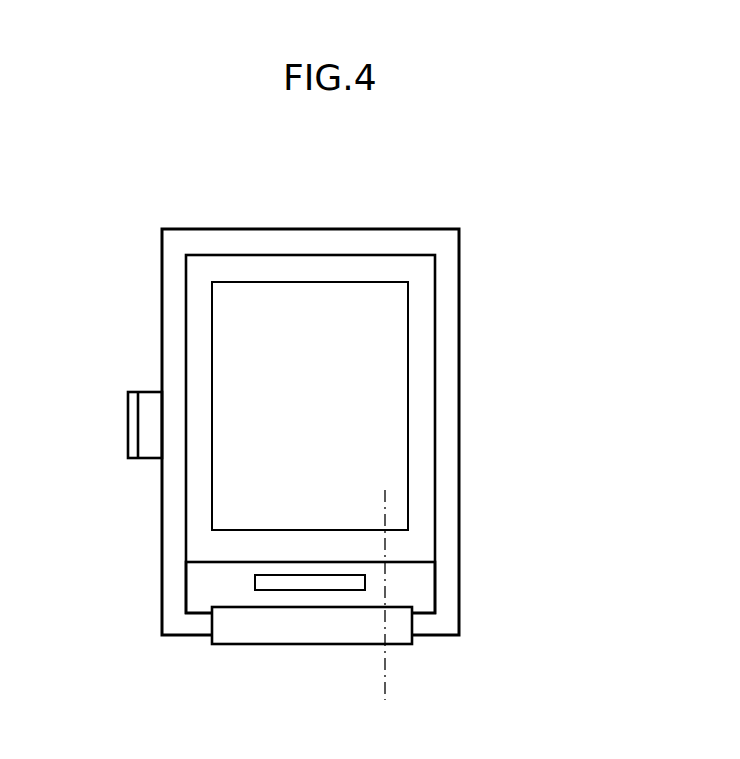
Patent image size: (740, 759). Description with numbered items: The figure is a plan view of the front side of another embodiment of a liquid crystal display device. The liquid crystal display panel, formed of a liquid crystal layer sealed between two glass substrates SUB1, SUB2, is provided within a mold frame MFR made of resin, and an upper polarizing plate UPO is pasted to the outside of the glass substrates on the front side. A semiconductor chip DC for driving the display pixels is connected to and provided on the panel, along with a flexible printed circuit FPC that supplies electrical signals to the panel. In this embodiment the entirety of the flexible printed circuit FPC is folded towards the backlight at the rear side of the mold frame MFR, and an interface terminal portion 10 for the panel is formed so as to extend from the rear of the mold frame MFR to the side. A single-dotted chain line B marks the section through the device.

The mold frame MFR is at (174, 285).
The glass substrate SUB1 is at (419, 334).
The glass substrate SUB2 is at (412, 588).
The upper polarizing plate UPO is at (306, 307).
The semiconductor chip DC is at (280, 583).
The interface terminal portion 10 is at (127, 423).
The flexible printed circuit FPC is at (269, 629).
The section line B-B' B is at (386, 597).